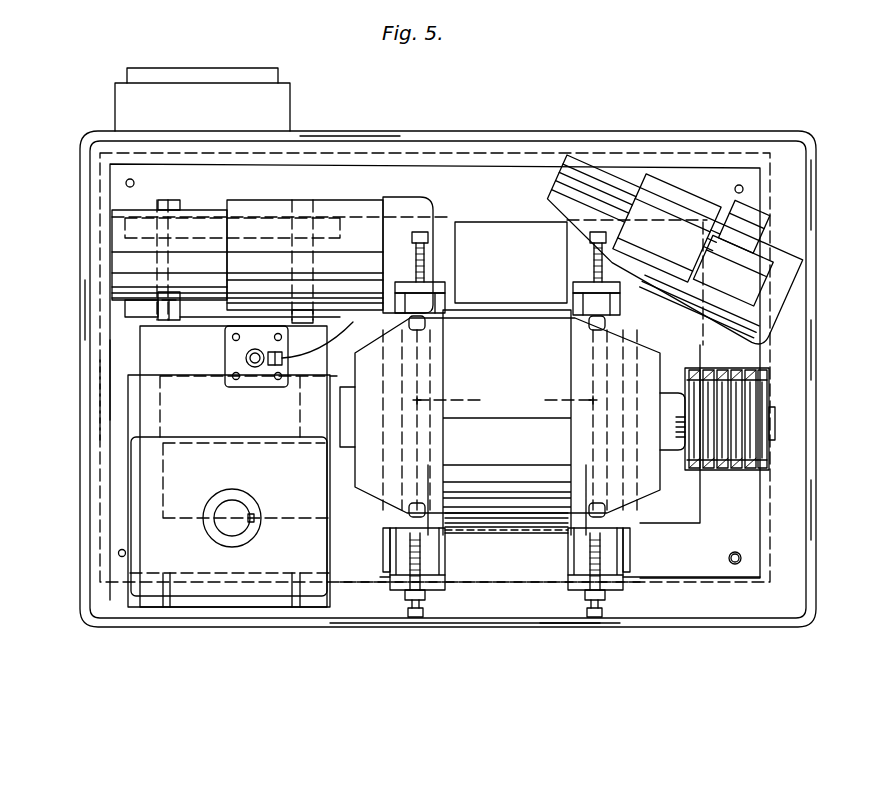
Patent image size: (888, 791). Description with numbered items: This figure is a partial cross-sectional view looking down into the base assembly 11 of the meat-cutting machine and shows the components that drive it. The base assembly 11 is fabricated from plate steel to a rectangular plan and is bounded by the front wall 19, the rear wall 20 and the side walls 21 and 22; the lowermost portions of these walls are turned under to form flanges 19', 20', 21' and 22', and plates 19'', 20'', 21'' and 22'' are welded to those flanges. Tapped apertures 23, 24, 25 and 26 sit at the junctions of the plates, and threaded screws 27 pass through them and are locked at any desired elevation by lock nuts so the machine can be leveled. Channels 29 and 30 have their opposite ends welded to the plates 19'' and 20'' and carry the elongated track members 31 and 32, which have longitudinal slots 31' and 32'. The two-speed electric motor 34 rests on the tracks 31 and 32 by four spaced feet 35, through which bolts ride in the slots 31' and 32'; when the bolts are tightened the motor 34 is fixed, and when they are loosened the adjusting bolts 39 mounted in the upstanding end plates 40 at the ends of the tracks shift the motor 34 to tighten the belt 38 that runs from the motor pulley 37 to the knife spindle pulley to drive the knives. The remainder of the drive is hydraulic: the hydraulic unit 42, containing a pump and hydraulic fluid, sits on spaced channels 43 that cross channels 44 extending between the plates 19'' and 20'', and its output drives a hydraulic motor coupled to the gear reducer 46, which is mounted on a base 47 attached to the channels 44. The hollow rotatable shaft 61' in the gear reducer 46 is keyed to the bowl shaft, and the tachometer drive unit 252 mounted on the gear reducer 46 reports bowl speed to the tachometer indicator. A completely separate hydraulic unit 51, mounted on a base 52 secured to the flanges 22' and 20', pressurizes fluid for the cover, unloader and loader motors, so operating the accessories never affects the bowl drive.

The base assembly 11 is at (806, 470).
The front wall 19 is at (465, 647).
The flange 19' is at (580, 642).
The plate 19'' is at (490, 621).
The rear wall 20 is at (435, 336).
The flange 20' is at (257, 102).
The plate 20'' is at (435, 345).
The side wall 21 is at (59, 310).
The flange 21' is at (63, 400).
The plate 21'' is at (69, 380).
The side wall 22 is at (838, 195).
The flange 22' is at (832, 350).
The plate 22'' is at (803, 510).
The tapped aperture 23 is at (744, 190).
The tapped aperture 24 is at (739, 561).
The tapped aperture 25 is at (118, 554).
The tapped aperture 26 is at (127, 185).
The threaded screw 27 is at (735, 559).
The channel 29 is at (450, 360).
The channel 30 is at (567, 444).
The track member 31 is at (628, 559).
The slot 31' is at (601, 405).
The track member 32 is at (390, 559).
The slot 32' is at (505, 402).
The two-speed electric motor 34 is at (518, 311).
The feet 35 is at (590, 320).
The motor pulley 37 is at (752, 397).
The belt 38 is at (747, 477).
The adjusting bolt 39 is at (430, 240).
The end plate 40 is at (437, 278).
The hydraulic unit 42 is at (355, 190).
The channel 43 is at (203, 221).
The channel 44 is at (163, 467).
The gear reducer 46 is at (150, 357).
The base 47 is at (128, 496).
The hydraulic unit 51 is at (712, 240).
The base 52 is at (778, 296).
The hollow rotatable shaft 61' is at (234, 500).
The tachometer drive unit 252 is at (255, 367).